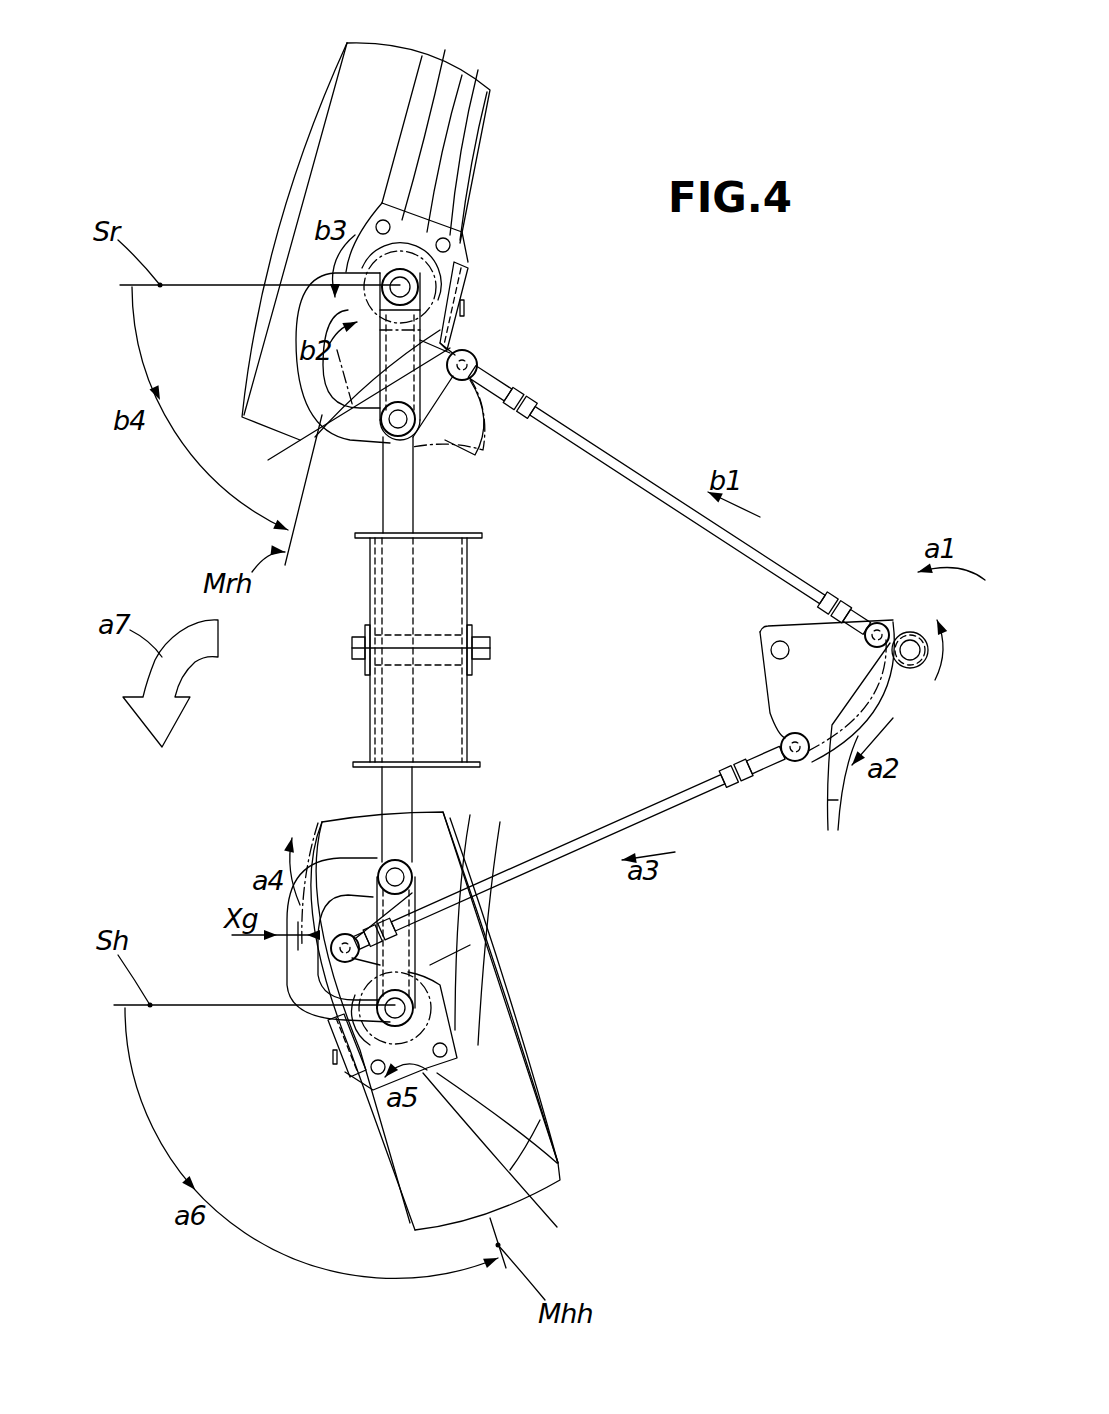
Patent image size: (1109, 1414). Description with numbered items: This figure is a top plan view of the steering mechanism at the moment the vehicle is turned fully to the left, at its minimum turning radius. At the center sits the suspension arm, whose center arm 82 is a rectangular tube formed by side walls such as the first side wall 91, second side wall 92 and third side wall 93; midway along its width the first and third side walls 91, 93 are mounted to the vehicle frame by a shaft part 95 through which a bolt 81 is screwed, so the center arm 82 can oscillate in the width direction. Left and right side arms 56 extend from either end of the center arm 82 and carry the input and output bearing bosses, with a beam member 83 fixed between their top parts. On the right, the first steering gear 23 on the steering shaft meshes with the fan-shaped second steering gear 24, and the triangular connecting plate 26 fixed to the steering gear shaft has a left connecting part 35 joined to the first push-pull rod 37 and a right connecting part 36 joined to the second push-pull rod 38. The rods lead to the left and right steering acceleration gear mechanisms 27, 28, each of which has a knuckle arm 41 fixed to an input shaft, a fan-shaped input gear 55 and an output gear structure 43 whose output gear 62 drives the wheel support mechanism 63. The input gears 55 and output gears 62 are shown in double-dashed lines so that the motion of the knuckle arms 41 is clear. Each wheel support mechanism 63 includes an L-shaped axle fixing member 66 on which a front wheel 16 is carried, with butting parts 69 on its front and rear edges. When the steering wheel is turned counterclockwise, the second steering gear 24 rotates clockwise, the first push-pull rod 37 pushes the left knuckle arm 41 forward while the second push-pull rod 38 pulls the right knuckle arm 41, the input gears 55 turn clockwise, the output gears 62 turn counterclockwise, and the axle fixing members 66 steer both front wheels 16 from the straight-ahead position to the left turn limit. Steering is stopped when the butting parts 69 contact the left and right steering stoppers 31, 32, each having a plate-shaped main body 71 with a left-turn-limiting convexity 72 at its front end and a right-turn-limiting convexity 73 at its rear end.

The front wheel 16 is at (342, 92).
The first steering gear 23 is at (907, 630).
The second steering gear 24 is at (890, 697).
The connecting plate 26 is at (843, 782).
The left steering acceleration gear mechanism 27 is at (490, 845).
The right steering acceleration gear mechanism 28 is at (557, 352).
The left steering stopper 31 is at (503, 1164).
The right steering stopper 32 is at (445, 52).
The left connecting part 35 is at (785, 738).
The right connecting part 36 is at (855, 630).
The first push-pull rod 37 is at (702, 795).
The second push-pull rod 38 is at (640, 476).
The knuckle arm 41 is at (480, 452).
The output gear structure 43 is at (318, 248).
The input gear 55 is at (488, 440).
The side arm 56 is at (292, 340).
The output gear 62 is at (425, 237).
The wheel support mechanism 63 is at (480, 275).
The axle fixing member 66 is at (472, 290).
The butting part 69 is at (470, 268).
The main body 71 is at (482, 70).
The left-turn-limiting convexity 72 is at (450, 243).
The right-turn-limiting convexity 73 is at (378, 222).
The bolt 81 is at (492, 648).
The center arm 82 is at (382, 492).
The beam member 83 is at (535, 935).
The first side wall 91 is at (372, 538).
The second side wall 92 is at (400, 530).
The third side wall 93 is at (398, 490).
The shaft part 95 is at (432, 635).